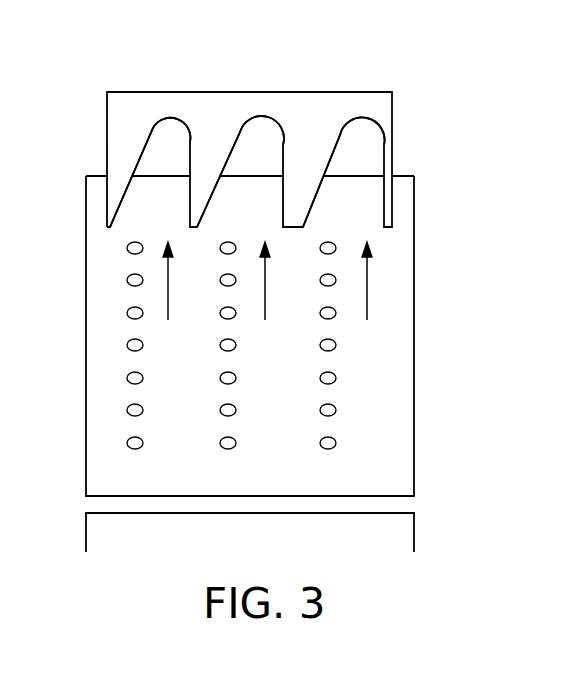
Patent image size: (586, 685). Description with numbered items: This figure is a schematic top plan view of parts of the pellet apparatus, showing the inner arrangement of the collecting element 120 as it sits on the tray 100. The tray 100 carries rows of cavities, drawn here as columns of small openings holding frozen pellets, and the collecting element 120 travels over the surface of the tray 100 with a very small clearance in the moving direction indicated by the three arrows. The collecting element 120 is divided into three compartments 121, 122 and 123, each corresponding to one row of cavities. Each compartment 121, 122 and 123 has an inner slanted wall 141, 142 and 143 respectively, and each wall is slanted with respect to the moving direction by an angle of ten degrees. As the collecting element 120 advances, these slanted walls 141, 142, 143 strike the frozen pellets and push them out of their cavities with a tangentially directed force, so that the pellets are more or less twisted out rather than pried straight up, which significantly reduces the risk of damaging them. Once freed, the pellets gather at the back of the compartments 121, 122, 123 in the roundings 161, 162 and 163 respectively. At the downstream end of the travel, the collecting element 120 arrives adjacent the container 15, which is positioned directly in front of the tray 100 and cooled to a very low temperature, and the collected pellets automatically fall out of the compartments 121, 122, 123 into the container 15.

The tray 100 is at (415, 360).
The collecting element 120 is at (393, 110).
The inner slanted wall 141 is at (147, 140).
The inner slanted wall 142 is at (232, 148).
The inner slanted wall 143 is at (340, 136).
The rounding 161 is at (177, 122).
The rounding 162 is at (262, 122).
The rounding 163 is at (366, 122).
The compartment 121 is at (171, 298).
The compartment 122 is at (269, 298).
The compartment 123 is at (371, 298).
The container 15 is at (414, 542).